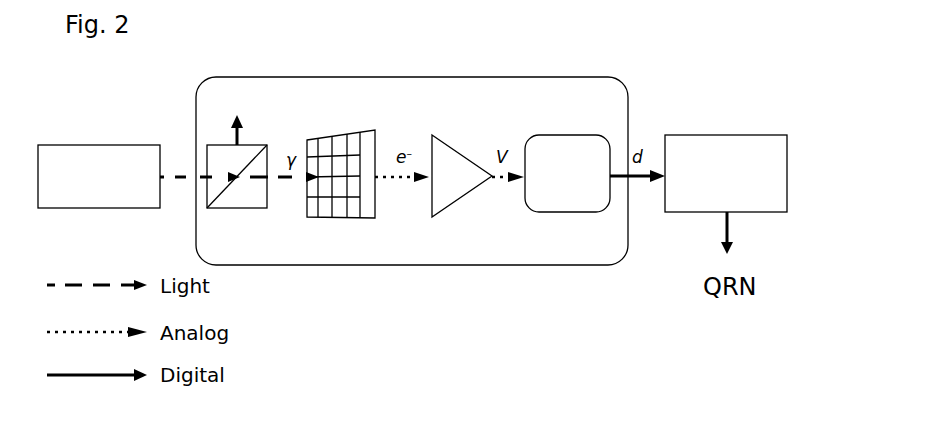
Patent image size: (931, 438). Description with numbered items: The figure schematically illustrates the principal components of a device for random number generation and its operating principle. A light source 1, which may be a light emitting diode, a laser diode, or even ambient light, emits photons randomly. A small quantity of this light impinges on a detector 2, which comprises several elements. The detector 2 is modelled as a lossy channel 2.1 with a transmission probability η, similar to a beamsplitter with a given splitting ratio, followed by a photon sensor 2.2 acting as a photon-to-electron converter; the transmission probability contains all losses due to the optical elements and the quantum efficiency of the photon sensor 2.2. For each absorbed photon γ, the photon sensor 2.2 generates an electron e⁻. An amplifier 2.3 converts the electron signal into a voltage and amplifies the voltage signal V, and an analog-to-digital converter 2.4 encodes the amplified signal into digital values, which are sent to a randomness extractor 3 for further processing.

The light source 1 is at (80, 155).
The detector 2 is at (567, 77).
The lossy channel 2.1 is at (253, 200).
The photon sensor 2.2 is at (352, 207).
The amplifier 2.3 is at (458, 192).
The analog-to-digital converter 2.4 is at (577, 200).
The randomness extractor 3 is at (703, 137).